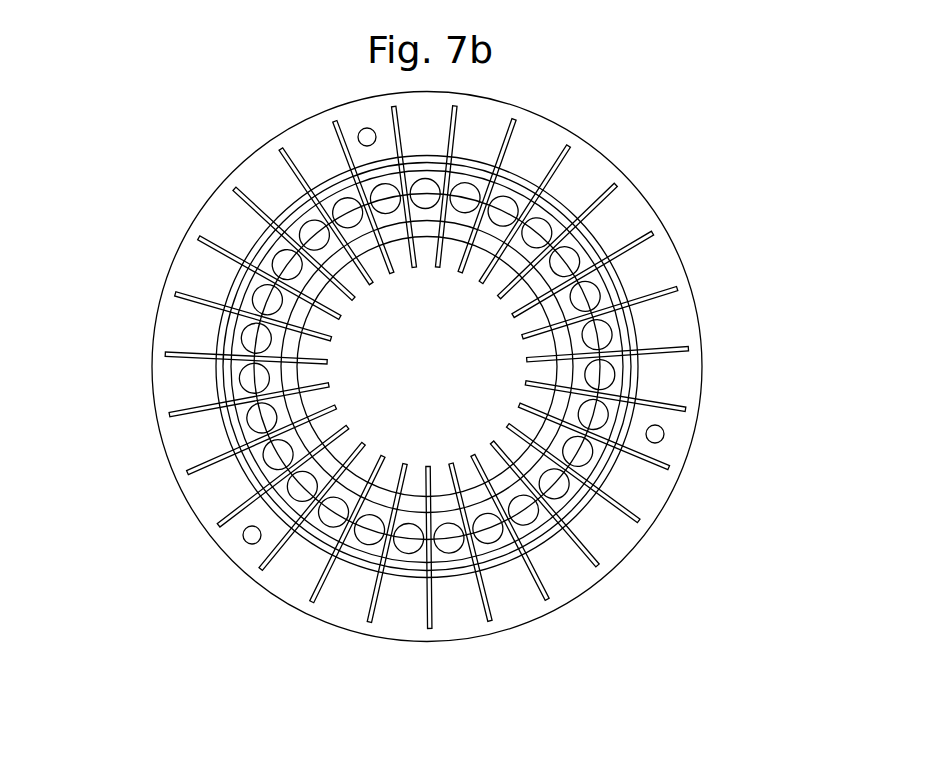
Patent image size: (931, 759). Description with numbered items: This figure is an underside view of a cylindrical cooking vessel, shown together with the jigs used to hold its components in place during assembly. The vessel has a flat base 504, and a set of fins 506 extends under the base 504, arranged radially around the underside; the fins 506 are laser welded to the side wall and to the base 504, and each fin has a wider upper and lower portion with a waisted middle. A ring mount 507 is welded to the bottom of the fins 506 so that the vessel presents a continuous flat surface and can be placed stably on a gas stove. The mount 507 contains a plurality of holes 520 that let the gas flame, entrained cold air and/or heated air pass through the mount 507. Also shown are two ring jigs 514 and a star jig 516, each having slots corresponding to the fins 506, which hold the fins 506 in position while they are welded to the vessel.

The ring jig 514 is at (203, 273).
The star jig 516 is at (330, 182).
The flat base 504 is at (547, 222).
The holes 520 is at (243, 382).
The fins 506 is at (640, 238).
The ring mount 507 is at (287, 513).